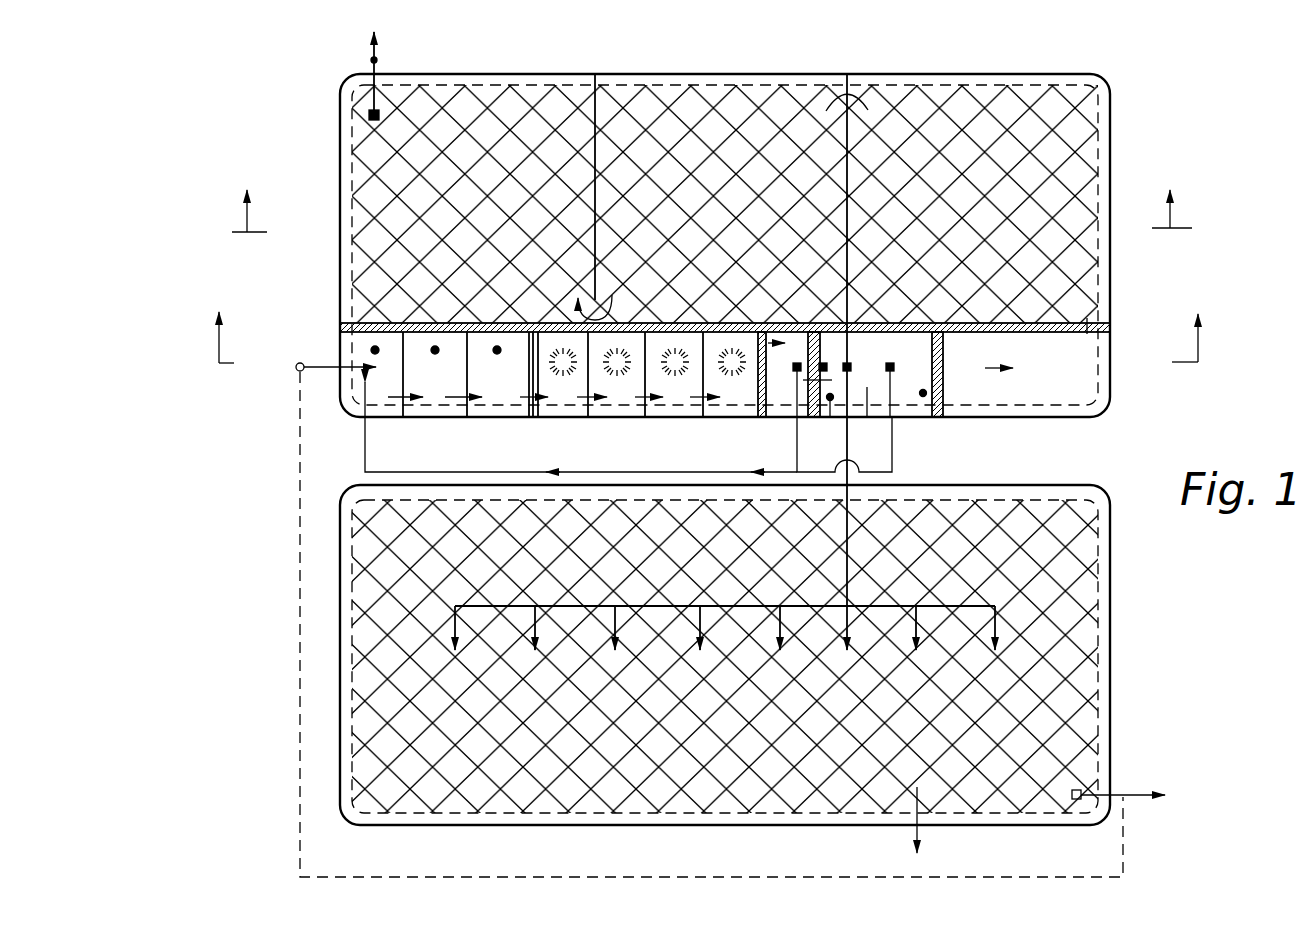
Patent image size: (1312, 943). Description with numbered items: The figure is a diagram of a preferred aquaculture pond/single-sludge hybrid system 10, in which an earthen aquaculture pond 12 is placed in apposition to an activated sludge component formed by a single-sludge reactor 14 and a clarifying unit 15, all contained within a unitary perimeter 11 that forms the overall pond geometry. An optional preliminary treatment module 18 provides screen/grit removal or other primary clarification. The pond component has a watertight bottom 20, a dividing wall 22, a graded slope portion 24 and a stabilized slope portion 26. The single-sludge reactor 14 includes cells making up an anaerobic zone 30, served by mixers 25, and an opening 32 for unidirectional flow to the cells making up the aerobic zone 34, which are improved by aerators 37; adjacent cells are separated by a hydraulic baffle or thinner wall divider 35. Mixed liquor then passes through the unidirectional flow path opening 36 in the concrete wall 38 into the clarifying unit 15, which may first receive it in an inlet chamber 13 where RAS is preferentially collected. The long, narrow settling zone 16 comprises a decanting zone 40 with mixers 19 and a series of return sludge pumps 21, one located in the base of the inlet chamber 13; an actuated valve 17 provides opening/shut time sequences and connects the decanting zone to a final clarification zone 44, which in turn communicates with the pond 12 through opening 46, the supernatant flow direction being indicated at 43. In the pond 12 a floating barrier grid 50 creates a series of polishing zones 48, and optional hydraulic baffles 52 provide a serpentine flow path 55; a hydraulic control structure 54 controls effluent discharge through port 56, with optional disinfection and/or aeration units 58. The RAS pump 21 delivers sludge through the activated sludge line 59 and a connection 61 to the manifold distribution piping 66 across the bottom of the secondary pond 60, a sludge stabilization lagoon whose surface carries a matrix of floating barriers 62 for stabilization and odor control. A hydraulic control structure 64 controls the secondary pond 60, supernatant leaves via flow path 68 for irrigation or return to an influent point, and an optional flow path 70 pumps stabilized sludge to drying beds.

The aquaculture pond/single-sludge hybrid system 10 is at (245, 248).
The unitary perimeter 11 is at (482, 73).
The earthen aquaculture pond 12 is at (400, 247).
The inlet chamber 13 is at (796, 352).
The single-sludge reactor 14 is at (886, 200).
The clarifying unit 15 is at (975, 353).
The settling zone 16 is at (867, 390).
The actuated valve 17 is at (947, 374).
The preliminary treatment module 18 is at (296, 362).
The mixers 19 is at (829, 402).
The watertight bottom 20 is at (1067, 373).
The return sludge pumps 21 is at (851, 355).
The dividing wall 22 is at (343, 322).
The graded slope portion 24 is at (338, 167).
The mixers 25 is at (369, 347).
The stabilized slope portion 26 is at (348, 408).
The anaerobic zone 30 is at (440, 375).
The opening 32 is at (505, 394).
The aerobic zone 34 is at (561, 380).
The wall divider 35 is at (597, 404).
The unidirectional flow path opening 36 is at (819, 362).
The aerators 37 is at (527, 405).
The concrete wall 38 is at (525, 349).
The decanting zone 40 is at (912, 371).
The flow direction 43 is at (990, 372).
The final clarification zone 44 is at (1050, 383).
The opening 46 is at (1056, 286).
The polishing zones 48 is at (513, 100).
The floating barrier grid 50 is at (934, 105).
The hydraulic baffles 52 is at (854, 73).
The serpentine flow path 55 is at (840, 98).
The hydraulic control structure 54 is at (362, 115).
The port 56 is at (376, 52).
The disinfection and/or aeration units 58 is at (372, 60).
The activated sludge line 59 is at (715, 477).
The secondary pond 60 is at (1064, 626).
The feed line connection 61 is at (851, 481).
The floating barriers 62 is at (1064, 570).
The hydraulic control structure 64 is at (1083, 781).
The manifold distribution piping 66 is at (452, 622).
The flow path 68 is at (1135, 797).
The flow path 70 is at (296, 368).